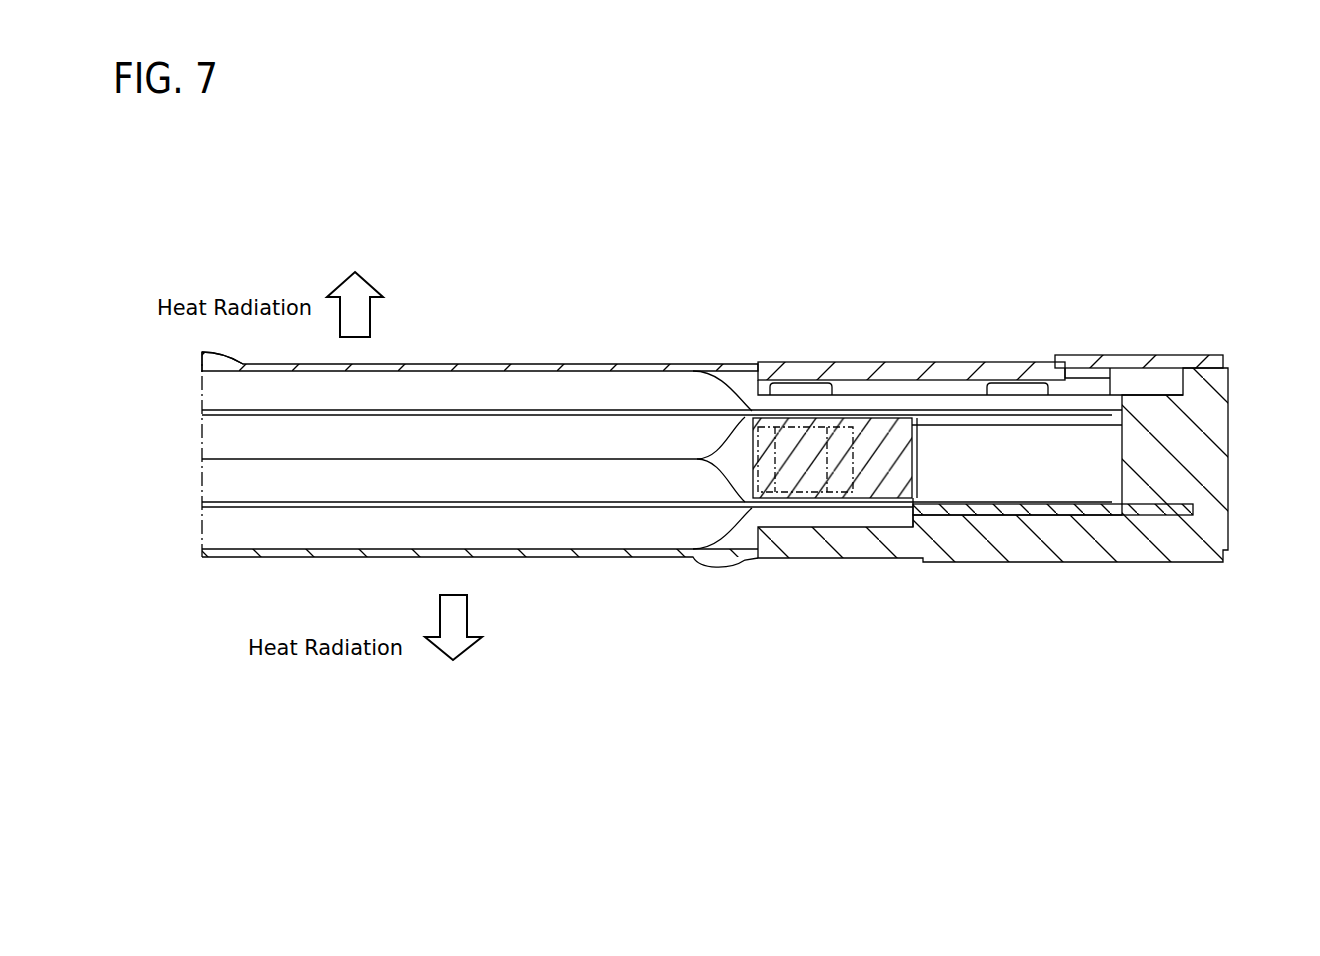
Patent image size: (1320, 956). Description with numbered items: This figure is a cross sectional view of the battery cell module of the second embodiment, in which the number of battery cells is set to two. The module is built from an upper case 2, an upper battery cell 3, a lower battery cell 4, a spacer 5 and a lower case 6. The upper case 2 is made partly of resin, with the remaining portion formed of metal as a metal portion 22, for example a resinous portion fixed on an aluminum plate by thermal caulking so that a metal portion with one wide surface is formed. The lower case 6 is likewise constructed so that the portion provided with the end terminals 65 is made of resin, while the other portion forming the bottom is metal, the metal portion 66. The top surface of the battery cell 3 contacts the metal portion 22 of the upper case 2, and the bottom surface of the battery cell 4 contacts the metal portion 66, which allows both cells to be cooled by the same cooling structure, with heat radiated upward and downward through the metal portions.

The upper case 2 is at (840, 362).
The battery cell 3 is at (650, 386).
The battery cell 4 is at (397, 512).
The spacer 5 is at (872, 503).
The lower case 6 is at (812, 559).
The metal portion 22 is at (495, 360).
The end terminals 65 is at (1093, 427).
The metal portion 66 is at (568, 562).